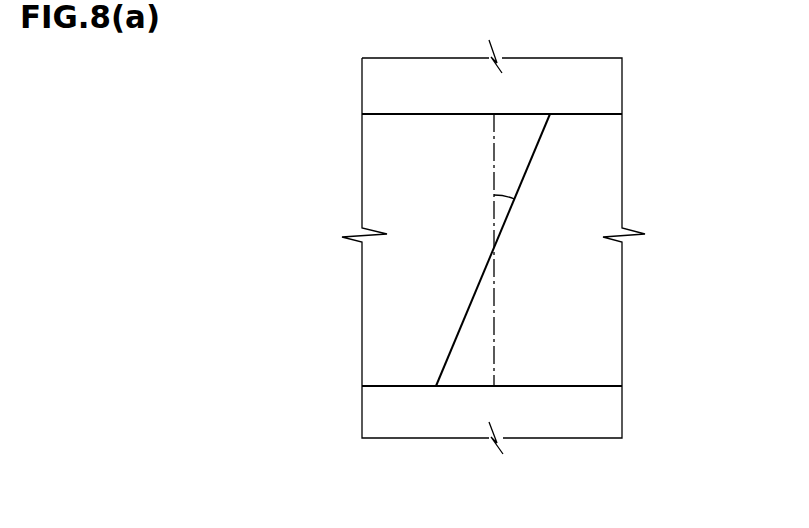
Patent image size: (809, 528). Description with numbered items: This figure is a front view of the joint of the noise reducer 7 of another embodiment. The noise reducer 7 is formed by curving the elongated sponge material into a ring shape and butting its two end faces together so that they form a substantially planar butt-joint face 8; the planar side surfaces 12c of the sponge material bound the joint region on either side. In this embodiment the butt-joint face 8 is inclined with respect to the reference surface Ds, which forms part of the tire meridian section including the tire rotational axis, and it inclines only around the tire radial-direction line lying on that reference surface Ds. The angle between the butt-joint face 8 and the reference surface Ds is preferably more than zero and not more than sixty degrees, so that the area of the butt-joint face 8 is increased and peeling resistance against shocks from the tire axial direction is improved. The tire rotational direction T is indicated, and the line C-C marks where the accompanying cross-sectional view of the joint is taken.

The noise reducer 7 is at (581, 316).
The side surfaces 12c is at (402, 114).
The butt-joint face 8 is at (526, 178).
The reference surface Ds is at (494, 340).
The tire rotational direction T is at (497, 474).
The line C- C is at (330, 250).